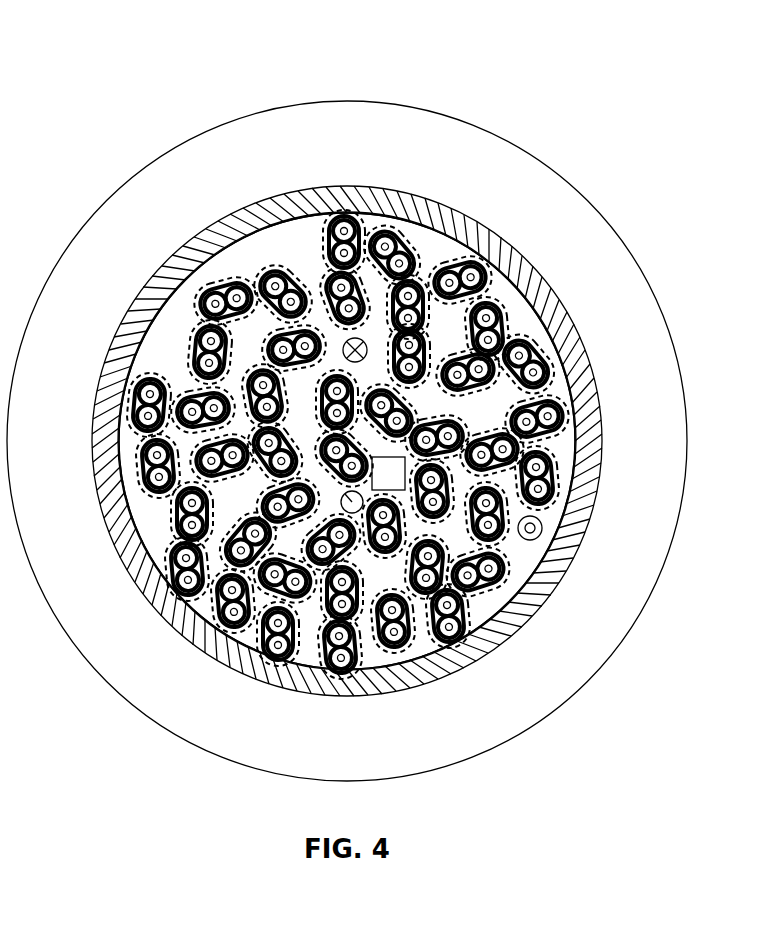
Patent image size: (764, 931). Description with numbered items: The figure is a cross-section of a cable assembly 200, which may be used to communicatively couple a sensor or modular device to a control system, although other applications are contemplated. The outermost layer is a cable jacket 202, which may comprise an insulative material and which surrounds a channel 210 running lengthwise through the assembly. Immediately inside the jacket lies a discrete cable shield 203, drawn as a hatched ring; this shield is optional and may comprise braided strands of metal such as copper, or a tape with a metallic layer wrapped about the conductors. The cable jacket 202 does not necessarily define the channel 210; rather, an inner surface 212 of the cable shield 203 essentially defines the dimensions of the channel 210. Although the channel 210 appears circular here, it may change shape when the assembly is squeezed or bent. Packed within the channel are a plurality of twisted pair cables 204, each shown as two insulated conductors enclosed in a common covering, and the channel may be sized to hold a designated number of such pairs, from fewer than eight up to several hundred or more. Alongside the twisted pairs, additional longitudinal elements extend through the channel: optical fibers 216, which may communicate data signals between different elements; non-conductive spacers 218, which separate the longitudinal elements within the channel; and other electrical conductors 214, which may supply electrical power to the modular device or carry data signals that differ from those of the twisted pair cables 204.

The cable assembly 200 is at (585, 108).
The cable jacket 202 is at (449, 148).
The cable shield 203 is at (338, 193).
The twisted pair cables 204 is at (303, 276).
The channel 210 is at (247, 259).
The inner surface 212 is at (142, 358).
The other electrical conductors 214 is at (343, 507).
The optical fibers 216 is at (356, 338).
The non-conductive spacers 218 is at (388, 472).